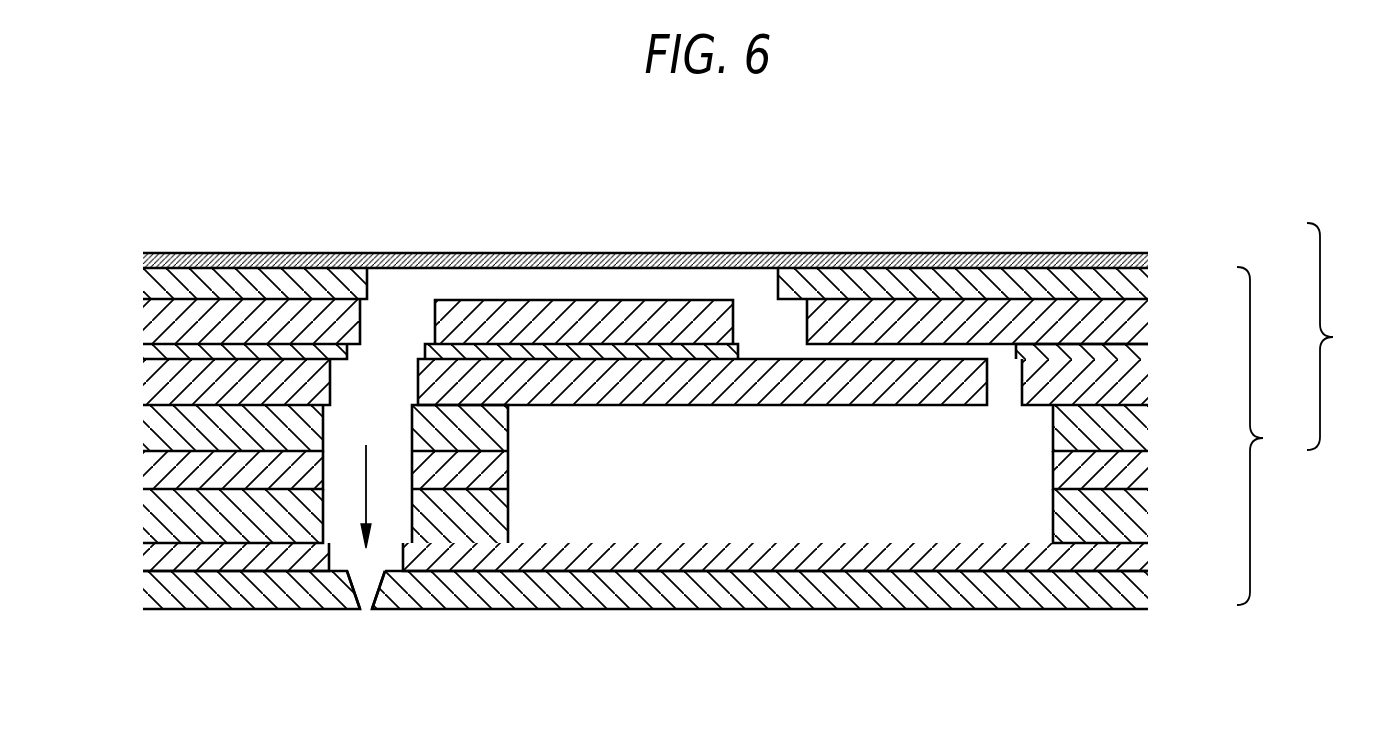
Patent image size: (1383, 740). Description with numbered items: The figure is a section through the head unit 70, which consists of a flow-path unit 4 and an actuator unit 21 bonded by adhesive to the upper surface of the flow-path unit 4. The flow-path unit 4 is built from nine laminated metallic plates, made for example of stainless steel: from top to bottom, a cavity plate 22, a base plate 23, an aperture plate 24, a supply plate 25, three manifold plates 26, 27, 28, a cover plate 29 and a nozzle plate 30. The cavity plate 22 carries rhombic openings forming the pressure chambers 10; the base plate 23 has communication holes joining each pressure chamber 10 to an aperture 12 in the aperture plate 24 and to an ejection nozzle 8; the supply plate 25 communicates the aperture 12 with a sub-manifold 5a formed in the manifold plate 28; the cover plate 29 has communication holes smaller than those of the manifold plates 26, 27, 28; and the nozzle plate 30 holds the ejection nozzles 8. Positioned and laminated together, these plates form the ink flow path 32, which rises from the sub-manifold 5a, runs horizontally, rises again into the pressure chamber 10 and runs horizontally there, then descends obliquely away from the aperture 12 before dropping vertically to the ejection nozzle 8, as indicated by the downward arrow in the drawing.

The flow-path unit 4 is at (1263, 436).
The head unit 70 is at (1340, 336).
The actuator unit 21 is at (1148, 256).
The cavity plate 22 is at (1133, 287).
The base plate 23 is at (1133, 326).
The aperture plate 24 is at (1133, 354).
The supply plate 25 is at (1133, 396).
The manifold plate 26 is at (1133, 432).
The manifold plate 27 is at (1133, 470).
The manifold plate 28 is at (1133, 512).
The cover plate 29 is at (1133, 560).
The nozzle plate 30 is at (1133, 598).
The pressure chamber 10 is at (593, 300).
The aperture 12 is at (888, 352).
The sub-manifold 5a is at (508, 510).
The ejection nozzle 8 is at (358, 593).
The ink flow path 32 is at (366, 497).